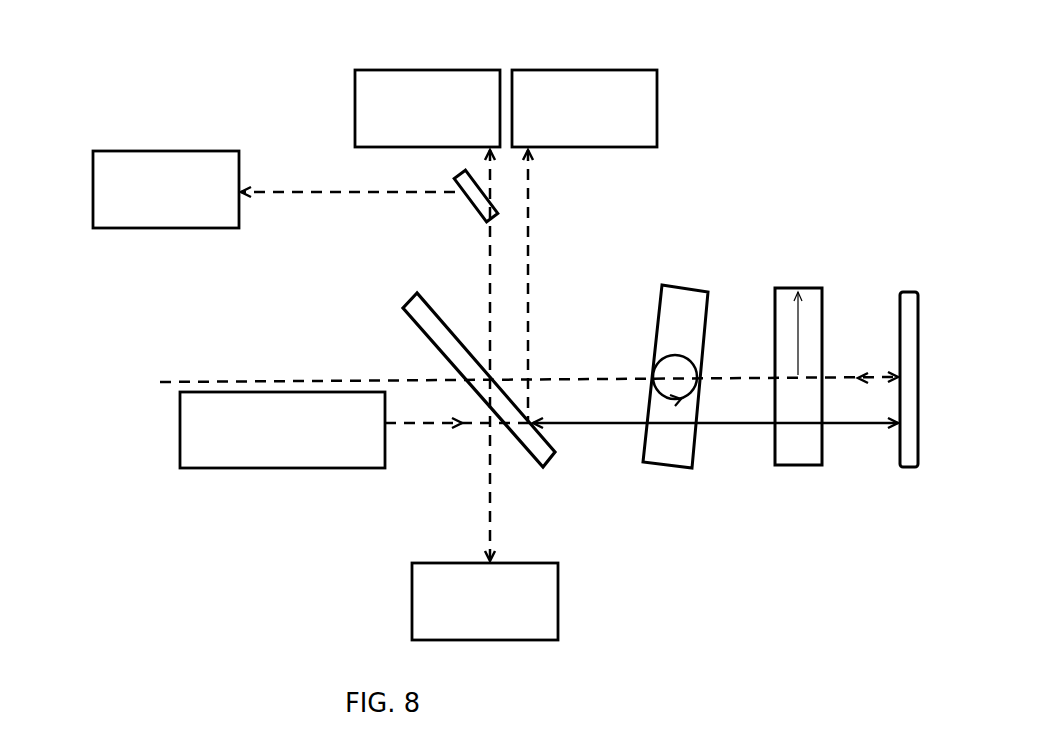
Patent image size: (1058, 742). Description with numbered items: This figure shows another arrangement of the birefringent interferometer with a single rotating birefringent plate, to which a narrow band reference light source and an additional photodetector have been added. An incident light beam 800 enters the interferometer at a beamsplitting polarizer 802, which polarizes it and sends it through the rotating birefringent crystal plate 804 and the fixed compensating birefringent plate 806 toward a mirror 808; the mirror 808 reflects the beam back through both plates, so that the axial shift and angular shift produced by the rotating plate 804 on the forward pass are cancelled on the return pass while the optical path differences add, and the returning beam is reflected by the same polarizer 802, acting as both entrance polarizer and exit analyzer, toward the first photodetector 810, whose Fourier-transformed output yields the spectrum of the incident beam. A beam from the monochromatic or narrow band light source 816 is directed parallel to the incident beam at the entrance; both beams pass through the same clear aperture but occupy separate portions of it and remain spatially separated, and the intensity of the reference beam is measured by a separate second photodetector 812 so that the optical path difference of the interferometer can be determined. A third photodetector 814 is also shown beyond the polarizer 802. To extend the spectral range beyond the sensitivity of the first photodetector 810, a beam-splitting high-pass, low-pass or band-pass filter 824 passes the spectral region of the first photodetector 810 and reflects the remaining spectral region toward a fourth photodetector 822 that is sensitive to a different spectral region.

The narrow band light source 800 is at (342, 380).
The beam splitter 802 is at (472, 337).
The polarization rotator 804 is at (677, 285).
The polarizer plate 806 is at (800, 288).
The mirror 808 is at (908, 290).
The photodetector 810 is at (352, 110).
The second photodetector 812 is at (410, 583).
The photo detector 3 814 is at (660, 105).
The narrow band light source 816 is at (178, 425).
The forth photodetector 822 is at (138, 146).
The beam-splitting filter 824 is at (452, 202).